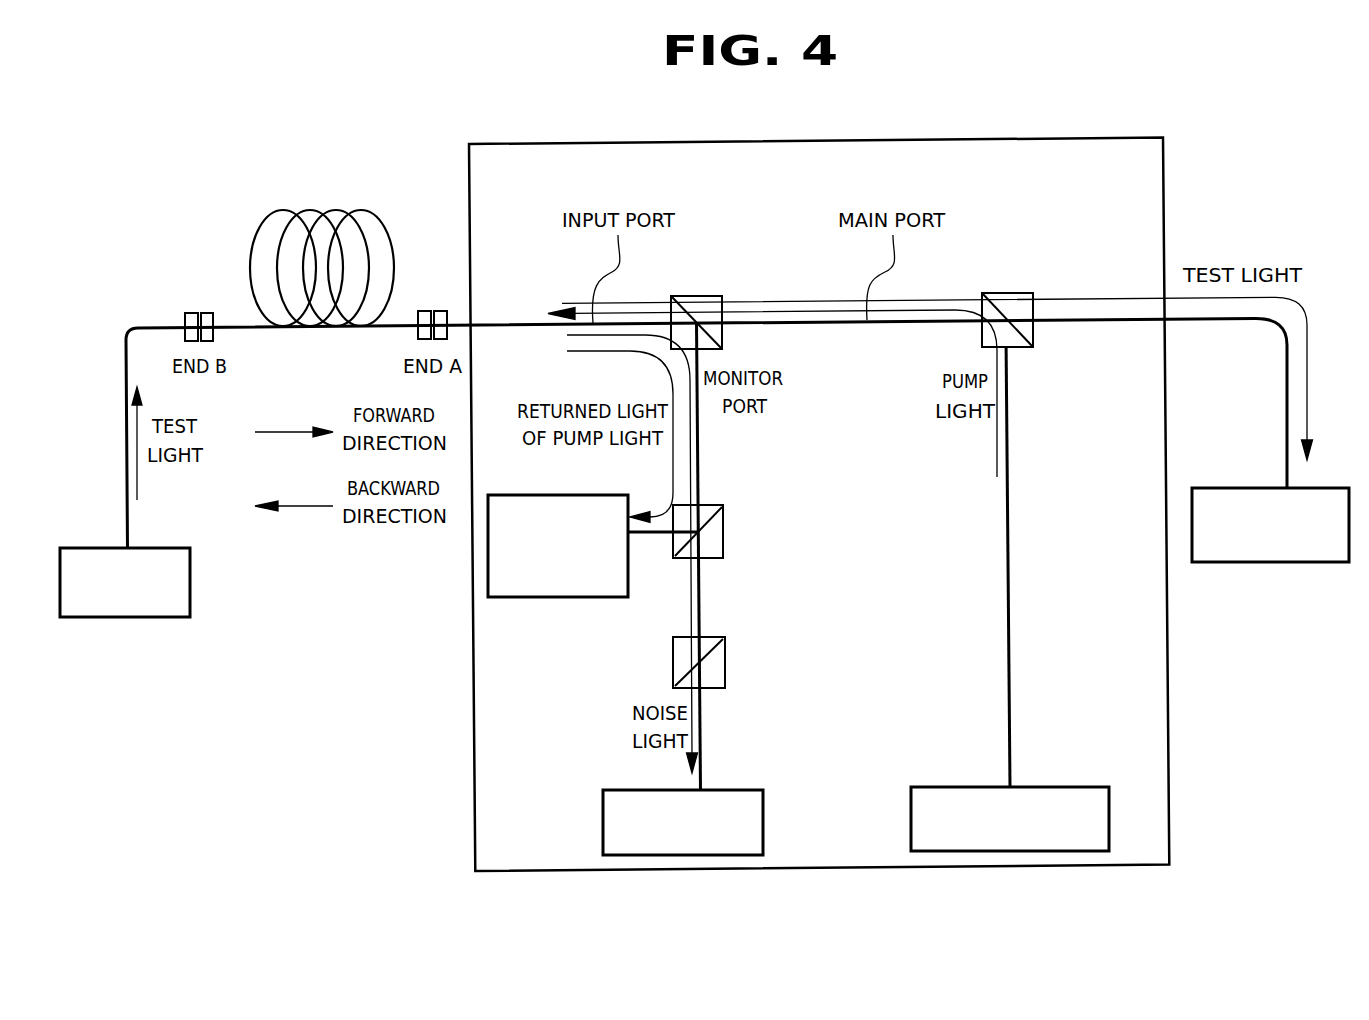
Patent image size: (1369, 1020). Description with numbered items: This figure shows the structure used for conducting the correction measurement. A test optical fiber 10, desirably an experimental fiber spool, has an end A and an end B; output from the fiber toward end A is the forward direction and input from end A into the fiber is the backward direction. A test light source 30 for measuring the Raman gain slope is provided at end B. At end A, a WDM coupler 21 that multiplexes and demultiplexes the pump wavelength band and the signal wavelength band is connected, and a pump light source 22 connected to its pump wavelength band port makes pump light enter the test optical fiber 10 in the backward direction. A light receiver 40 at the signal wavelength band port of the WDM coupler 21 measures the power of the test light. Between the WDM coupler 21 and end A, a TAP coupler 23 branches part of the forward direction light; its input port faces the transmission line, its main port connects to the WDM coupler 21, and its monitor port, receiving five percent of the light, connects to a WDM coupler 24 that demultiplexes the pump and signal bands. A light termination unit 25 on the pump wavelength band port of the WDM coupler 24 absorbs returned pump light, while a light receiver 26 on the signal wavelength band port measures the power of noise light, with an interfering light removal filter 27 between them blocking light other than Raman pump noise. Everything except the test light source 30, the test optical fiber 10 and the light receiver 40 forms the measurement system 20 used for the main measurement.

The test optical fiber 10 is at (392, 232).
The measurement system 20 is at (1143, 137).
The WDM coupler 21 is at (1027, 347).
The pump light source 22 is at (1027, 787).
The TAP coupler 23 is at (722, 340).
The WDM coupler 24 is at (707, 503).
The light termination unit 25 is at (550, 598).
The light receiver 26 is at (722, 790).
The interfering light removal filter 27 is at (722, 637).
The test light source 30 is at (190, 572).
The light receiver 40 is at (1273, 562).